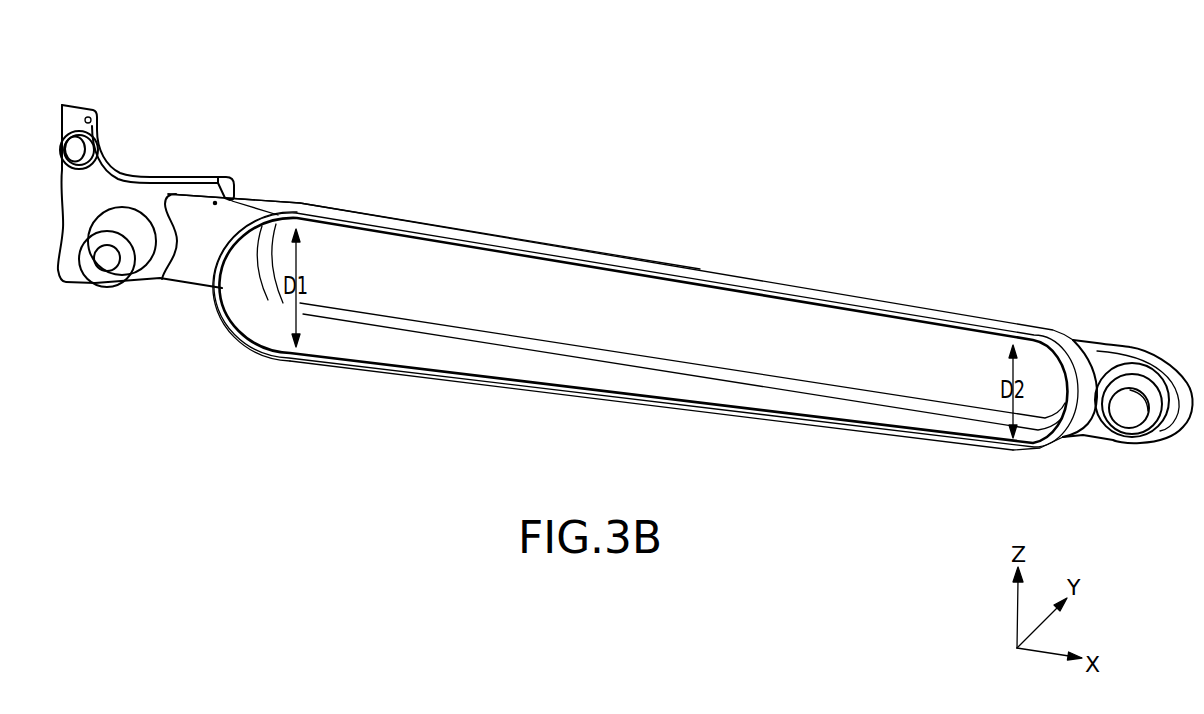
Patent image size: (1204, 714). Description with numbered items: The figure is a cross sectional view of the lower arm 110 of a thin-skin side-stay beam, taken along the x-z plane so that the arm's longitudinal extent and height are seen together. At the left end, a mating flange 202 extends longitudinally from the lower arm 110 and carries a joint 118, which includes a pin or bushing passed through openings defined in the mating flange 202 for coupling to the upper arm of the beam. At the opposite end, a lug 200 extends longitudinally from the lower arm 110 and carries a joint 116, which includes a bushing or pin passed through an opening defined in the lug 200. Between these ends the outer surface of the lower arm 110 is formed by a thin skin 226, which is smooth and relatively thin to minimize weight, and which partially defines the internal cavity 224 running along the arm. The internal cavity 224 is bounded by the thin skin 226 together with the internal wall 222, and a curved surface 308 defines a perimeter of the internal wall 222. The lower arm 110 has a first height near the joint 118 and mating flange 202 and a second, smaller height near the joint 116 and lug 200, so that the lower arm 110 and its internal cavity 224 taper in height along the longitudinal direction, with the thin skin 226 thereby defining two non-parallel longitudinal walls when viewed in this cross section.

The lower arm 110 is at (701, 121).
The mating flange 202 is at (240, 221).
The internal wall 222 is at (818, 322).
The thin skin 226 is at (934, 320).
The internal cavity 224 is at (983, 352).
The curved surface 308 is at (940, 412).
The lug 200 is at (1103, 360).
The joint 116 is at (1146, 438).
The joint 118 is at (107, 282).